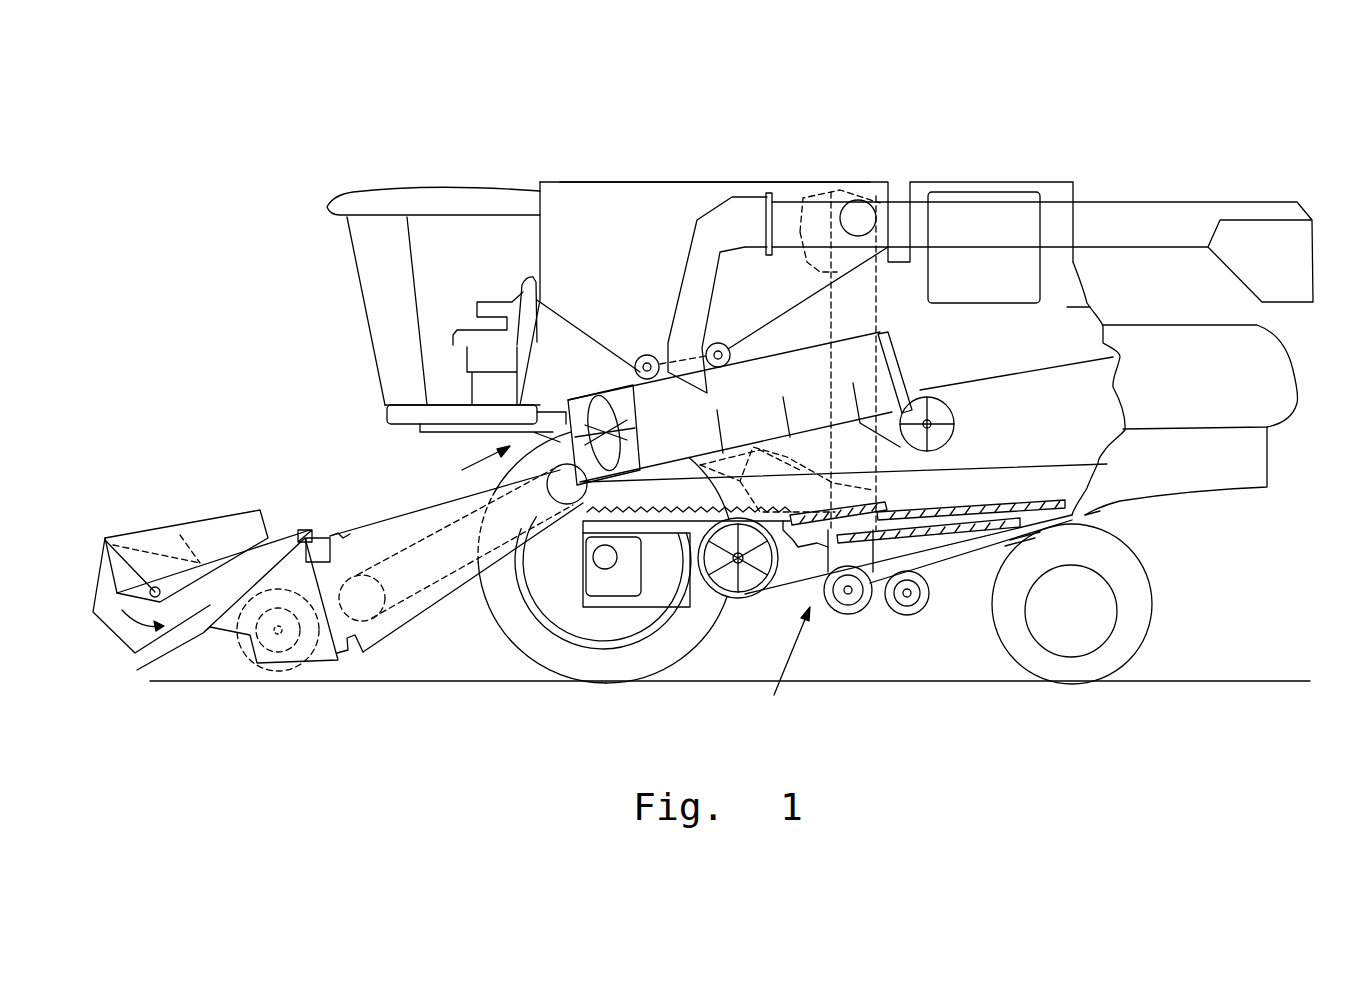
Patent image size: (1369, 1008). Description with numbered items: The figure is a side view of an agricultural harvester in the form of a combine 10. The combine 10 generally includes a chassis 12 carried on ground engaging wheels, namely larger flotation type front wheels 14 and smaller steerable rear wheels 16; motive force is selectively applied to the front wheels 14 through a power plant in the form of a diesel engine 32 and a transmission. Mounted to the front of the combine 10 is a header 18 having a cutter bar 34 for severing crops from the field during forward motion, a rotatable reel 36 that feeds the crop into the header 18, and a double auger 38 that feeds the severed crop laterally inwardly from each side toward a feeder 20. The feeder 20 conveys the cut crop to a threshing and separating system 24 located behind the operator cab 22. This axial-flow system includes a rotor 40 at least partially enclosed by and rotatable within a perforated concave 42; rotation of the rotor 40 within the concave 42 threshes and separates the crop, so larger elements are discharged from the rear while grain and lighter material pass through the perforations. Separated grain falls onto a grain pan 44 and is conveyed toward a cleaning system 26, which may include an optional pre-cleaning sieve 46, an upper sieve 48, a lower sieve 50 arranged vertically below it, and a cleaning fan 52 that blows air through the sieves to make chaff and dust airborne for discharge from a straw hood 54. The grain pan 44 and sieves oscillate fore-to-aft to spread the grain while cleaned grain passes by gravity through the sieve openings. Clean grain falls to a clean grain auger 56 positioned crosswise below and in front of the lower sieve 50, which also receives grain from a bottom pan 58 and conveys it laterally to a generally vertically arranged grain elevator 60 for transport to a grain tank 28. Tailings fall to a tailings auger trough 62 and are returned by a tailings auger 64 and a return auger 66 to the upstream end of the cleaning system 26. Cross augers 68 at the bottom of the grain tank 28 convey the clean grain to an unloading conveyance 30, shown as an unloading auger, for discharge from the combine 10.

The combine 10 is at (427, 172).
The chassis 12 is at (1080, 517).
The front wheels 14 is at (512, 638).
The rear wheels 16 is at (1147, 623).
The header 18 is at (191, 506).
The feeder 20 is at (402, 516).
The operator cab 22 is at (362, 288).
The threshing and separating system 24 is at (471, 467).
The cleaning system 26 is at (782, 666).
The grain tank 28 is at (608, 182).
The unloading conveyance 30 is at (1167, 207).
The diesel engine 32 is at (972, 191).
The cutter bar 34 is at (222, 682).
The rotatable reel 36 is at (100, 582).
The double auger 38 is at (281, 655).
The rotor 40 is at (595, 405).
The perforated concave 42 is at (778, 383).
The grain pan 44 is at (587, 530).
The pre-cleaning sieve 46 is at (870, 499).
The upper sieve 48 is at (980, 507).
The lower sieve 50 is at (952, 537).
The cleaning fan 52 is at (740, 605).
The straw hood 54 is at (1280, 367).
The clean grain auger 56 is at (851, 617).
The bottom pan 58 is at (1007, 540).
The grain elevator 60 is at (880, 310).
The tailings auger trough 62 is at (1005, 545).
The tailings auger 64 is at (907, 637).
The return auger 66 is at (815, 480).
The cross augers 68 is at (645, 355).